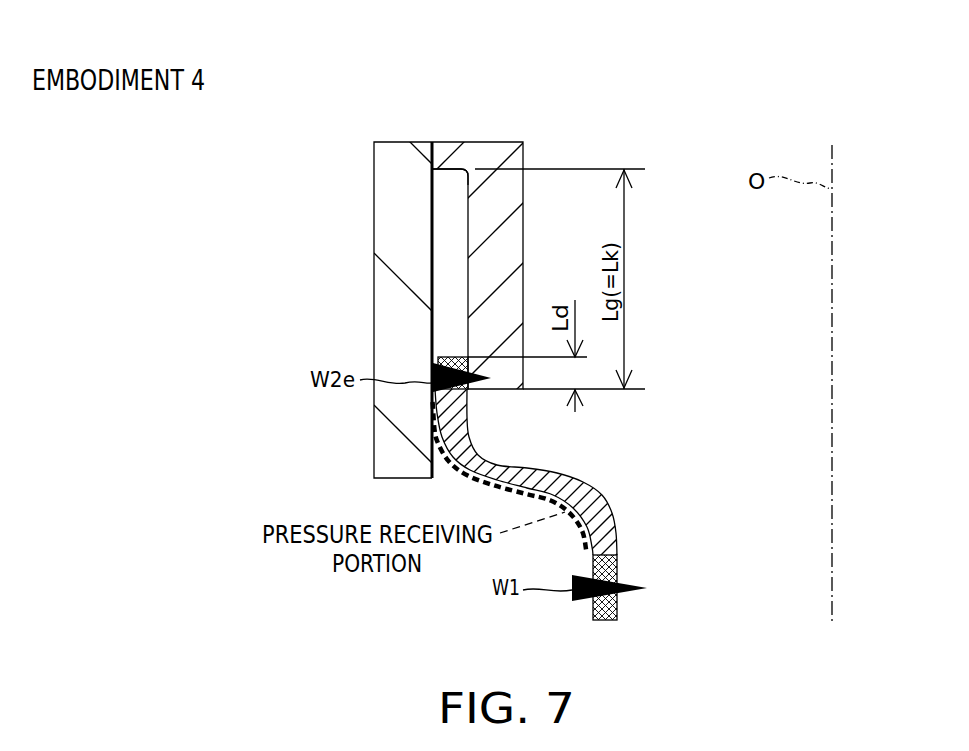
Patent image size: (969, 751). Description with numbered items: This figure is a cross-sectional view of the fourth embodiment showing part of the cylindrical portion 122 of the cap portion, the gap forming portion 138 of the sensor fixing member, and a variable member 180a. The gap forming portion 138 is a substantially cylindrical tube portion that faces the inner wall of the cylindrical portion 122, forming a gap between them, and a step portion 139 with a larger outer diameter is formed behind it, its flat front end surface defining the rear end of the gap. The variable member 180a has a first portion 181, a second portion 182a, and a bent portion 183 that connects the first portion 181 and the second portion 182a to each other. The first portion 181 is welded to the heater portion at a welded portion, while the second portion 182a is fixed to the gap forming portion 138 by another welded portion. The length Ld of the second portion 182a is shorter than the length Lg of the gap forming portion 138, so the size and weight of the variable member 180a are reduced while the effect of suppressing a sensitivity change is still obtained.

The cylindrical portion 122 is at (389, 241).
The gap forming portion 138 is at (524, 149).
The step portion 139 is at (448, 156).
The variable member 180a is at (616, 507).
The first portion 181 is at (618, 567).
The second portion 182a is at (436, 358).
The bent portion 183 is at (481, 435).